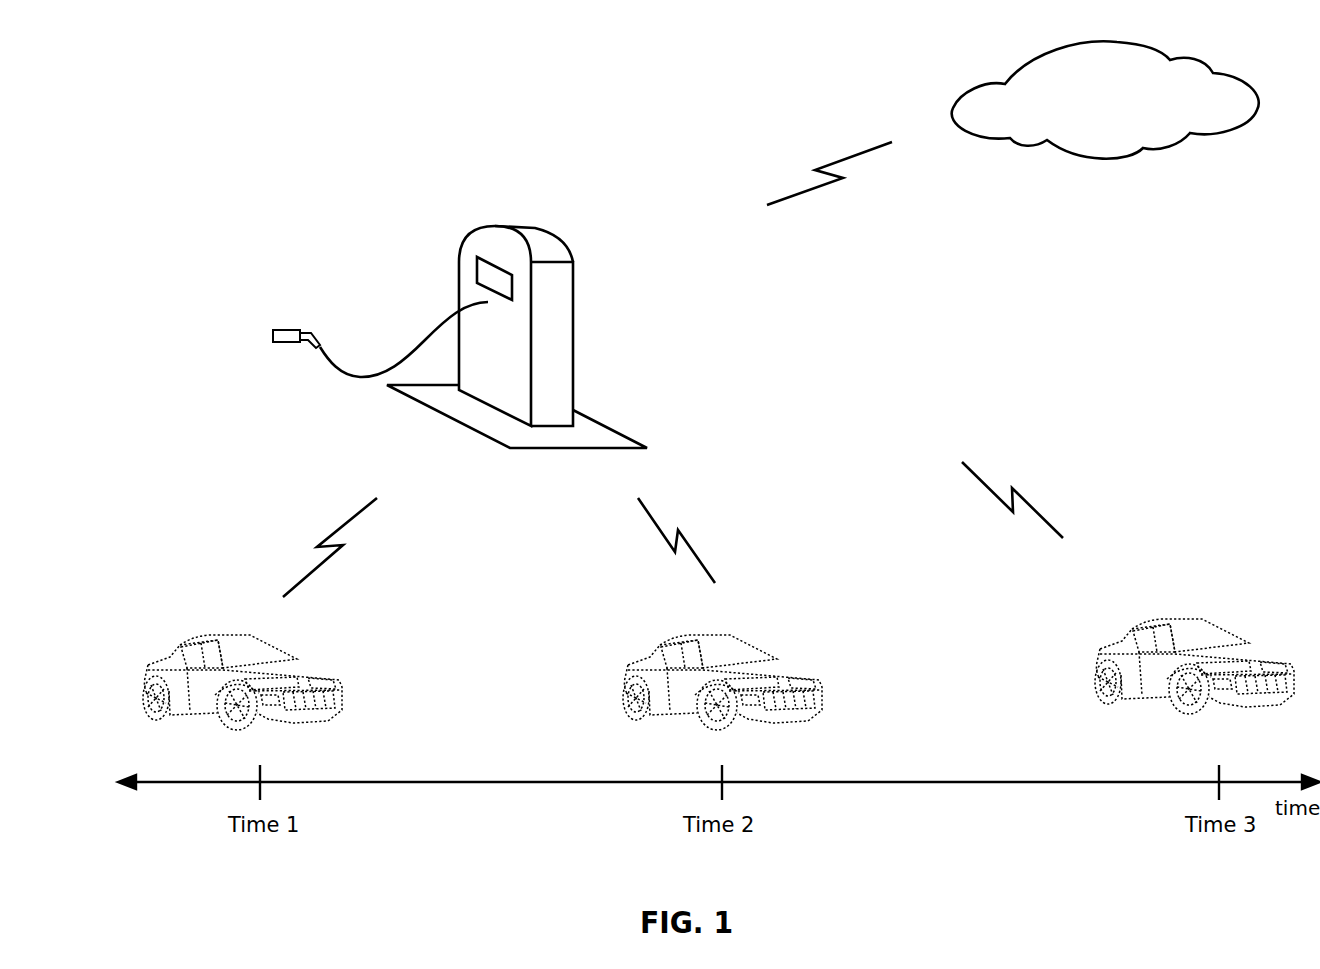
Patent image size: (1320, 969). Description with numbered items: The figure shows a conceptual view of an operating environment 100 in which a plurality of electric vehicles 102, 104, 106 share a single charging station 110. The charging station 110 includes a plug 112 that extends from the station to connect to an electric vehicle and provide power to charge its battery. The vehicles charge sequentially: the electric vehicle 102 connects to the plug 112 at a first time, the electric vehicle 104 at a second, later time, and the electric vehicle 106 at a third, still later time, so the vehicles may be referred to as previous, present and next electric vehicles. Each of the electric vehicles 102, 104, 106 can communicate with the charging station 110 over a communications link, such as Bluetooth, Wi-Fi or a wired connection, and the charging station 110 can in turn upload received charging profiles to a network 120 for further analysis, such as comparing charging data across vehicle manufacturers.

The operating environment 100 is at (292, 90).
The electric vehicle 102 is at (207, 640).
The electric vehicle 104 is at (688, 640).
The electric vehicle 106 is at (1158, 620).
The charging station 110 is at (560, 240).
The plug 112 is at (273, 333).
The network 120 is at (1058, 55).